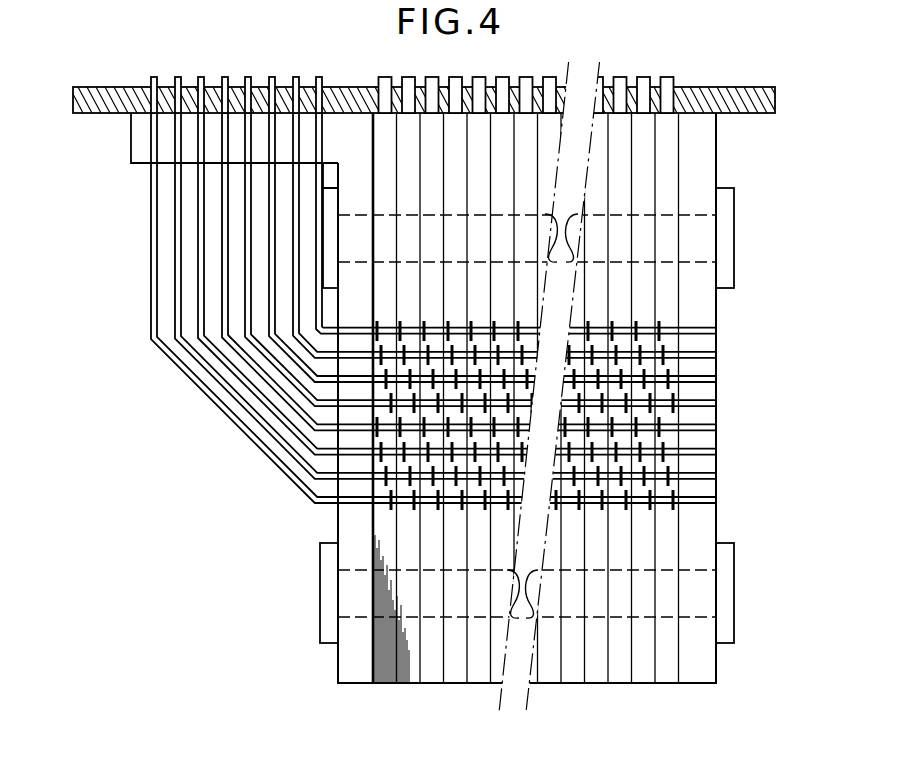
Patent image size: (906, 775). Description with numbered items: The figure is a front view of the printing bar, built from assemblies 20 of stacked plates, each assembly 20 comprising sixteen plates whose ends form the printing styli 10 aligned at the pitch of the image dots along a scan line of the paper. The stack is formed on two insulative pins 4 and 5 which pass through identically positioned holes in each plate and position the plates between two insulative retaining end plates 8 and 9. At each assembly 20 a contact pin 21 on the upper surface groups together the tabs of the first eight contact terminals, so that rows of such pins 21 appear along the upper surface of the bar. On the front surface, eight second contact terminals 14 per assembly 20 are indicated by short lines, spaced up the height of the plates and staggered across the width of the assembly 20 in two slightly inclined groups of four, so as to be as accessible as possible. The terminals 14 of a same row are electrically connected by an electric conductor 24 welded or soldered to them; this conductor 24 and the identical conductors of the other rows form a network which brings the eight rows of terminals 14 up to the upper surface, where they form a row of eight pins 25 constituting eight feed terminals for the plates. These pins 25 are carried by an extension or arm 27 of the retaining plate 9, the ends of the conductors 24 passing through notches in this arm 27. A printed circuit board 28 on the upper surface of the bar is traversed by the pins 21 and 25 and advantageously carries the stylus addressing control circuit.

The insulative pin 4 is at (727, 251).
The insulative pin 5 is at (728, 600).
The insulative retaining end plate 8 is at (700, 316).
The insulative retaining end plate 9 is at (358, 515).
The printing stylus 10 is at (378, 661).
The second contact terminal 14 is at (678, 508).
The assembly of stacked plates 20 is at (672, 183).
The contact pin 21 is at (672, 82).
The electric conductor 24 is at (258, 441).
The feed terminal pin 25 is at (252, 78).
The arm of the insulative retaining plate 27 is at (141, 136).
The printed circuit board 28 is at (736, 93).